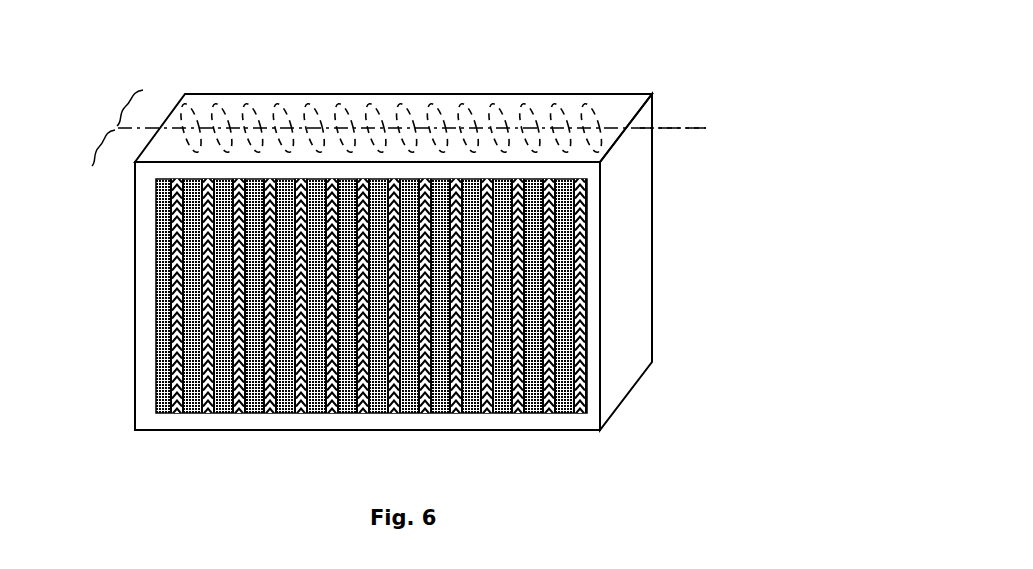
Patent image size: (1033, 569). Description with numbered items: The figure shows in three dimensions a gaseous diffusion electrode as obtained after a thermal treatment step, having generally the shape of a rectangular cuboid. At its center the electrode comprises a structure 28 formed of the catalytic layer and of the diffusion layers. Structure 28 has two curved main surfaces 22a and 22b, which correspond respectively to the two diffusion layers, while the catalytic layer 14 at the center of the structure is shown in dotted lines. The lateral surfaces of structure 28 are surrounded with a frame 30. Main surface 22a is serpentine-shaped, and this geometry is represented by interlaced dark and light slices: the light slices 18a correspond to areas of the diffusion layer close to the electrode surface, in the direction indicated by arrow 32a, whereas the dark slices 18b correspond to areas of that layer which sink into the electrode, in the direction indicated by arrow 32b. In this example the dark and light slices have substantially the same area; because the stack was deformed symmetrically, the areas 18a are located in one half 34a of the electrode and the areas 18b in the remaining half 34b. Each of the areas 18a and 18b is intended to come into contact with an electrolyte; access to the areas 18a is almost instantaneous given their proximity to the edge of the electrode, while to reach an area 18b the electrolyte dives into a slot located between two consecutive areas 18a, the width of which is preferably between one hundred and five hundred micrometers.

The catalytic layer 14 is at (386, 106).
The light slices 18a is at (517, 380).
The dark slices 18b is at (508, 281).
The main surface 22a is at (119, 446).
The main surface 22b is at (632, 66).
The structure 28 is at (155, 243).
The frame 30 is at (318, 430).
The arrow 32a is at (705, 130).
The arrow 32b is at (698, 128).
The half of the electrode 34a is at (85, 142).
The remaining half of the electrode 34b is at (111, 103).